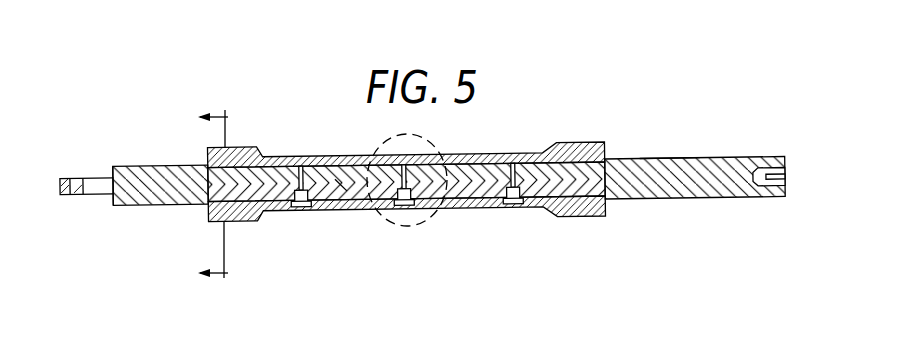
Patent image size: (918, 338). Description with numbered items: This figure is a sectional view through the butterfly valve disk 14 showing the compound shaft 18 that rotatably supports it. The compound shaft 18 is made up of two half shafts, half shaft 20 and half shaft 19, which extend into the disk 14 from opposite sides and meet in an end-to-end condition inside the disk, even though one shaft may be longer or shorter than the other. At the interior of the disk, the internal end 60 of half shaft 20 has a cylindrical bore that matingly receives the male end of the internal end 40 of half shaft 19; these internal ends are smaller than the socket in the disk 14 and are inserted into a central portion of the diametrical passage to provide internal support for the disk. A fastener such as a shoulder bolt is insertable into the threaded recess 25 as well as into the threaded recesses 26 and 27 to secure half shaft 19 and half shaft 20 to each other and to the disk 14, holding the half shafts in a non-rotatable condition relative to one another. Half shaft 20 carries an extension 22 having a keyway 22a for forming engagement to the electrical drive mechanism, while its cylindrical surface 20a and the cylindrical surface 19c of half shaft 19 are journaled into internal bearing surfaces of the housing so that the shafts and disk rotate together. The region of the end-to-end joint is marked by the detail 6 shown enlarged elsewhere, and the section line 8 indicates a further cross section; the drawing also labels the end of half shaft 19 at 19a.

The detail region of FIG. 6 is at (418, 222).
The section line 8- 8 is at (214, 197).
The disk 14 is at (258, 150).
The compound shaft 18 is at (724, 61).
The half shaft 19 is at (722, 178).
The end slot 19a is at (773, 157).
The cylindrical surface 19c is at (677, 157).
The half shaft 20 is at (160, 197).
The cylindrical surface 20a is at (178, 207).
The extension 22 is at (95, 180).
The keyway 22a is at (79, 192).
The threaded recess 25 is at (408, 204).
The threaded recess 26 is at (300, 210).
The threaded recess 27 is at (512, 205).
The internal end 40 is at (465, 186).
The internal end 60 is at (342, 187).